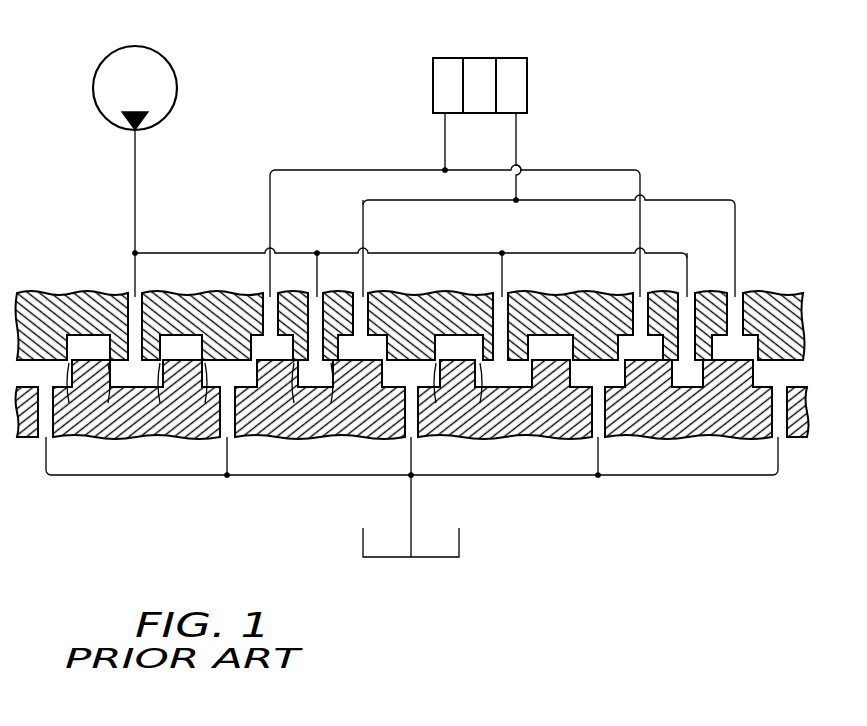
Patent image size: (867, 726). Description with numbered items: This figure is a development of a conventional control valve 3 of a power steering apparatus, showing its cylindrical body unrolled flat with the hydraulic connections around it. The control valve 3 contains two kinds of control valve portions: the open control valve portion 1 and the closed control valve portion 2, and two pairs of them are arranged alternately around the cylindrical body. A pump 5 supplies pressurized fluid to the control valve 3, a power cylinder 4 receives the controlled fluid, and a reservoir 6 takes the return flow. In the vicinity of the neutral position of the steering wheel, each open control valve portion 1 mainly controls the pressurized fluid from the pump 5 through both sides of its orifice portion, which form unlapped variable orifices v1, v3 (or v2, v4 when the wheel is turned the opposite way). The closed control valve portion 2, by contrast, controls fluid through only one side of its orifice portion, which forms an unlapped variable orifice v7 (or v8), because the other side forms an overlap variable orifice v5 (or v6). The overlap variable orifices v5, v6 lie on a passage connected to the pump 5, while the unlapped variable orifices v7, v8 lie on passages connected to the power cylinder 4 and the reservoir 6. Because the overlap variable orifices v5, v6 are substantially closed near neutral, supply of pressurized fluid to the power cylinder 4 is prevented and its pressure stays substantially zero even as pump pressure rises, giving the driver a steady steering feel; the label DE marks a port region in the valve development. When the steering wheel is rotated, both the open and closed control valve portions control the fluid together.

The open control valve portion 1 is at (95, 276).
The closed control valve portion 2 is at (259, 282).
The control valve 3 is at (429, 324).
The power cylinder 4 is at (508, 58).
The pump 5 is at (100, 82).
The reservoir 6 is at (444, 556).
The unlapped variable orifice v1 is at (113, 394).
The unlapped variable orifice v2 is at (165, 394).
The unlapped variable orifice v3 is at (72, 394).
The unlapped variable orifice v4 is at (205, 394).
The overlap variable orifice v5 is at (333, 394).
The overlap variable orifice v6 is at (440, 394).
The unlapped variable orifice v7 is at (293, 394).
The unlapped variable orifice v8 is at (484, 394).
The pressure relief connection DE is at (362, 347).